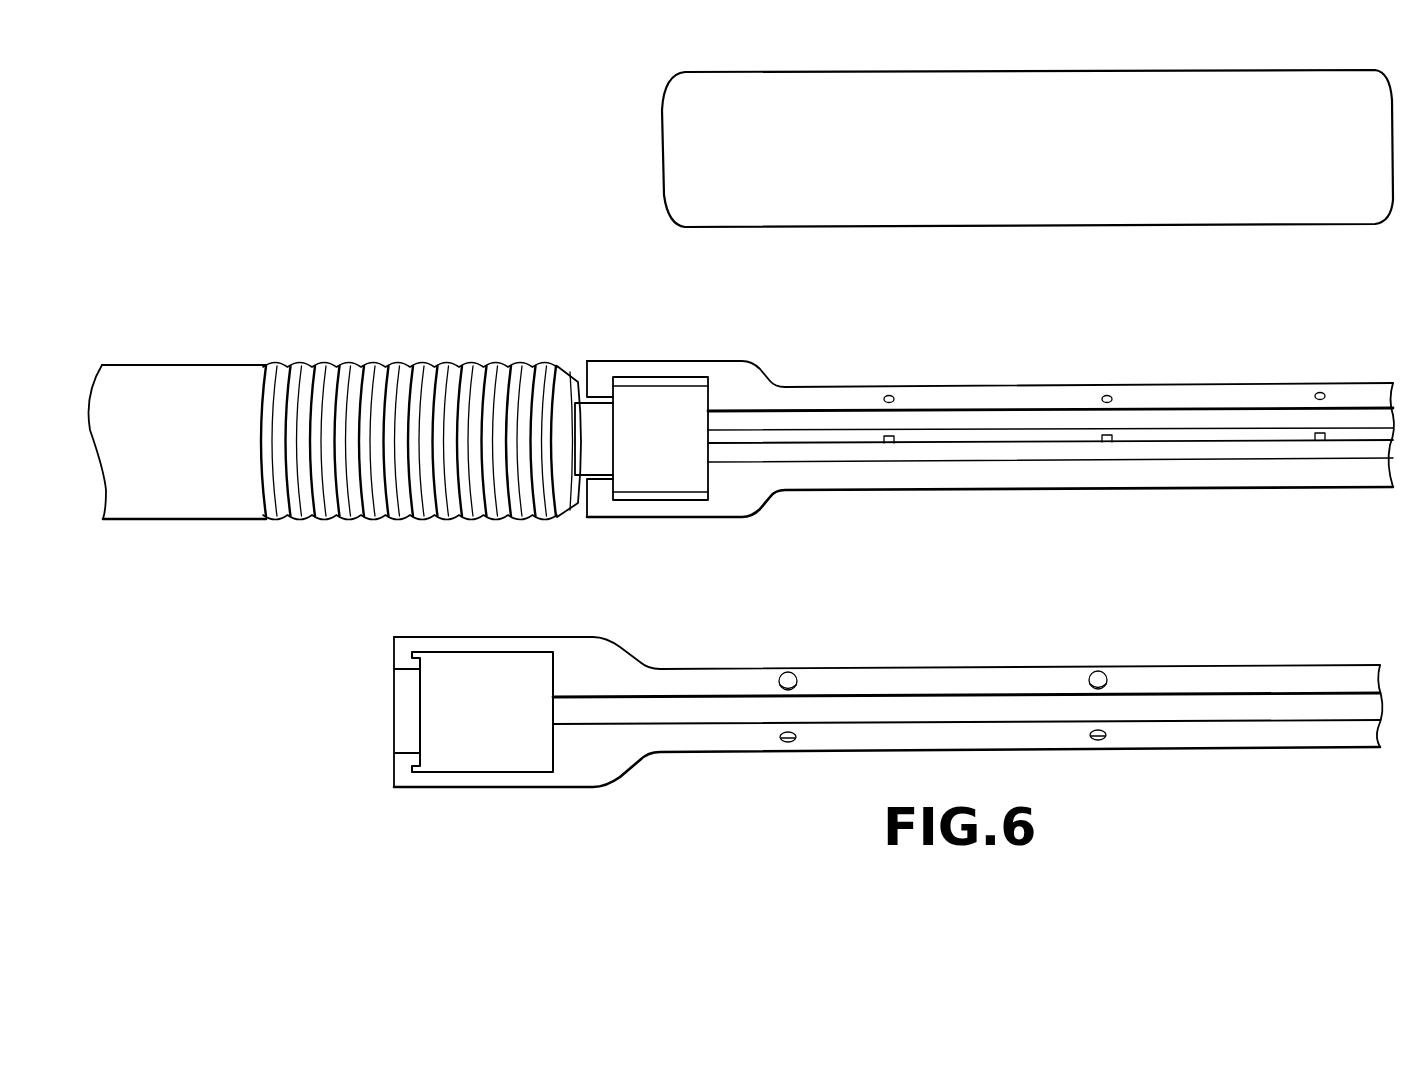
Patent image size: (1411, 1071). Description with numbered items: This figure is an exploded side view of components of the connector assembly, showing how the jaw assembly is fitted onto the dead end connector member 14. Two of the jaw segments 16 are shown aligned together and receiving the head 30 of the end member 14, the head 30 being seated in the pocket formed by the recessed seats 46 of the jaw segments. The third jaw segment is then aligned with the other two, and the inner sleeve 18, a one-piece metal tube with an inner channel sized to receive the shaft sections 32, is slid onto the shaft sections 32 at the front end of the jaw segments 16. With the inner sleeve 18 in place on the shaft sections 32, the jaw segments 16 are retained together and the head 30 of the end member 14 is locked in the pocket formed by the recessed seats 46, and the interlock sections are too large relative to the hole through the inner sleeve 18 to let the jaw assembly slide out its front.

The dead end connector member 14 is at (233, 363).
The jaw segment 16 is at (933, 386).
The inner sleeve 18 is at (987, 229).
The head 30 is at (642, 398).
The shaft section 32 is at (1078, 388).
The recessed seat 46 is at (658, 381).